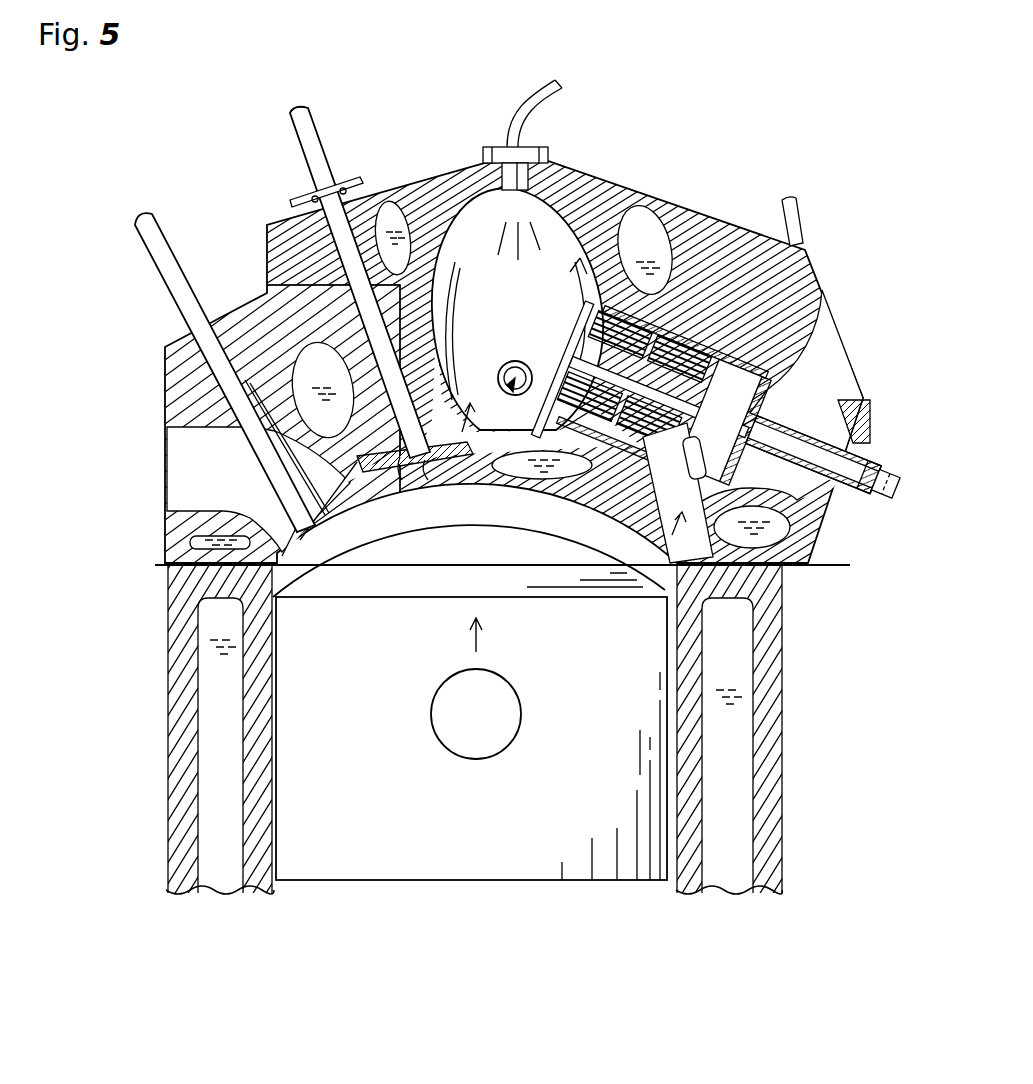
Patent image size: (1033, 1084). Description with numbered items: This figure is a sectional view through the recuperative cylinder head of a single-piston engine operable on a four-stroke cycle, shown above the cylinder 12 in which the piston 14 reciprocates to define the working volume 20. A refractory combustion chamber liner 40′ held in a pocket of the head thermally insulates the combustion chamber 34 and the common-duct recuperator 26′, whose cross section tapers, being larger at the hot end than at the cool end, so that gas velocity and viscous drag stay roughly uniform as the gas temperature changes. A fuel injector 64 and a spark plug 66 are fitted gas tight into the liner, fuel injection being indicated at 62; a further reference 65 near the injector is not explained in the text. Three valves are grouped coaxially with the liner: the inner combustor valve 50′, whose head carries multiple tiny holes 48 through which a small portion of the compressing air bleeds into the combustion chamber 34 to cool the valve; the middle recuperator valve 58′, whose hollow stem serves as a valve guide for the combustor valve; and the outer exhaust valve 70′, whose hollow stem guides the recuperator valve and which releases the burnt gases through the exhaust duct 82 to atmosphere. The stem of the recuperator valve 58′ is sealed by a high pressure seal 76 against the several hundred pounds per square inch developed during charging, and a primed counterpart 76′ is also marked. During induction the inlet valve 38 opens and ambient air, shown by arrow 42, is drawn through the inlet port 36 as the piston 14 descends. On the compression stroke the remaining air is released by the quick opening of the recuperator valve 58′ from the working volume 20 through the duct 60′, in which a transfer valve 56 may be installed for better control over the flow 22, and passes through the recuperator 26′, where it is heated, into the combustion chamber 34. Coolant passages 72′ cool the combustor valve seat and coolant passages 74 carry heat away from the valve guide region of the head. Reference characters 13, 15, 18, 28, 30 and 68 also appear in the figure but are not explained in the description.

The cylinder 12 is at (665, 893).
The valve seat 13 is at (376, 498).
The piston 14 is at (471, 738).
The combustion chamber 15 is at (469, 561).
The head-block interface 18 is at (165, 565).
The working volume 20 is at (475, 512).
The flow 22 is at (660, 547).
The recuperator 26′ is at (713, 280).
The injector housing 28 is at (852, 358).
The valve disc 30 is at (544, 364).
The combustion chamber 34 is at (461, 372).
The inlet port 36 is at (258, 489).
The inlet valve 38 is at (188, 268).
The combustion chamber liner 40′ is at (713, 261).
The arrow 42 is at (215, 473).
The holes 48 is at (455, 488).
The combustor valve 50′ is at (300, 160).
The transfer valve 56 is at (800, 207).
The recuperator valve 58′ is at (893, 507).
The duct 60′ is at (780, 572).
The fuel injection 62 is at (540, 200).
The fuel injector 64 is at (478, 188).
The fuel inlet 65 is at (572, 78).
The spark plug 66 is at (513, 360).
The check valve 68 is at (452, 430).
The exhaust valve 70′ is at (773, 412).
The coolant passages 72′ is at (776, 400).
The coolant passages 74 is at (653, 218).
The high pressure seal 76 is at (866, 448).
The high pressure seal 76′ is at (292, 208).
The exhaust duct 82 is at (672, 285).